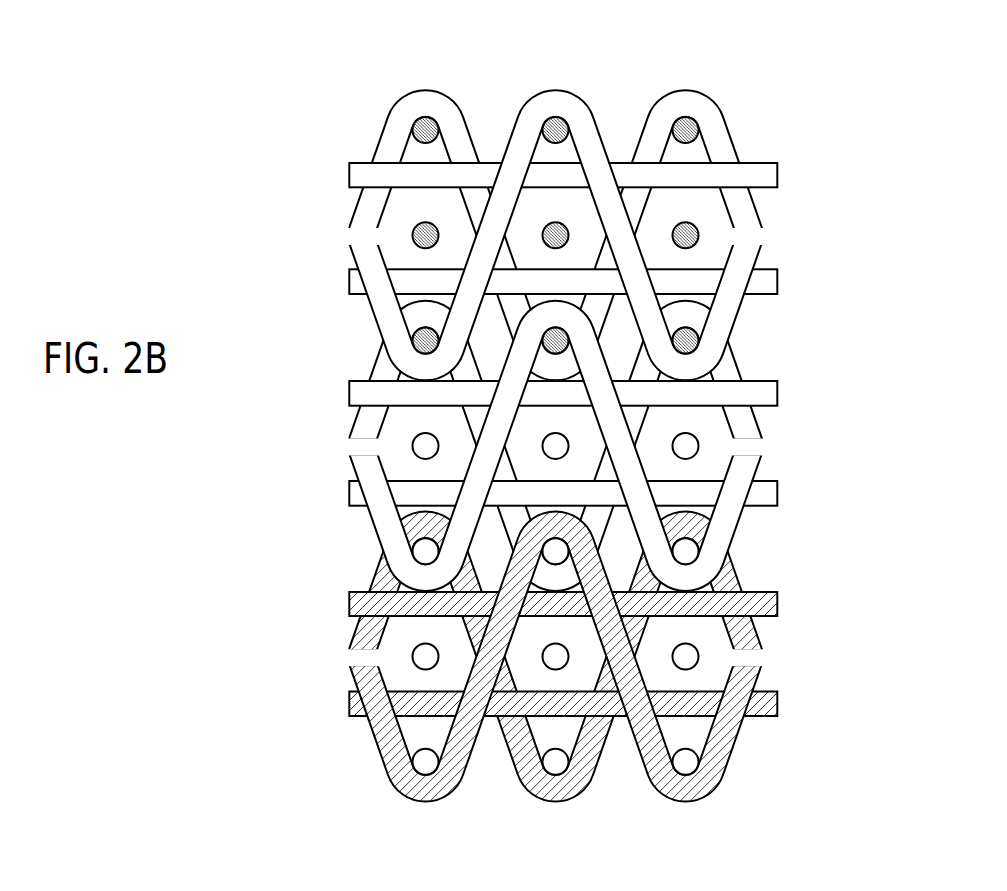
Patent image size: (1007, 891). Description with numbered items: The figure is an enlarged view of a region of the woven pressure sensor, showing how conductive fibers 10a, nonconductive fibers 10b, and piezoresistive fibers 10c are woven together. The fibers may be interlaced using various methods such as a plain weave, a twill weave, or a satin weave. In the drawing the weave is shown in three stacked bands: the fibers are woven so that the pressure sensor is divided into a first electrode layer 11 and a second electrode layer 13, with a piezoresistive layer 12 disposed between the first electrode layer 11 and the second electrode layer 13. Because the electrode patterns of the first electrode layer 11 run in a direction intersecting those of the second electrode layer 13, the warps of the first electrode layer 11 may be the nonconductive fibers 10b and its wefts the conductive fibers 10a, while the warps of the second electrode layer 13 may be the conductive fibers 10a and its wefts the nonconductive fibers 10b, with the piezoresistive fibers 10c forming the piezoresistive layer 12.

The conductive fibers 10a is at (560, 122).
The nonconductive fibers 10b is at (689, 108).
The piezoresistive fibers 10c is at (771, 390).
The first electrode layer 11 is at (298, 92).
The piezoresistive layer 12 is at (298, 378).
The second electrode layer 13 is at (298, 590).